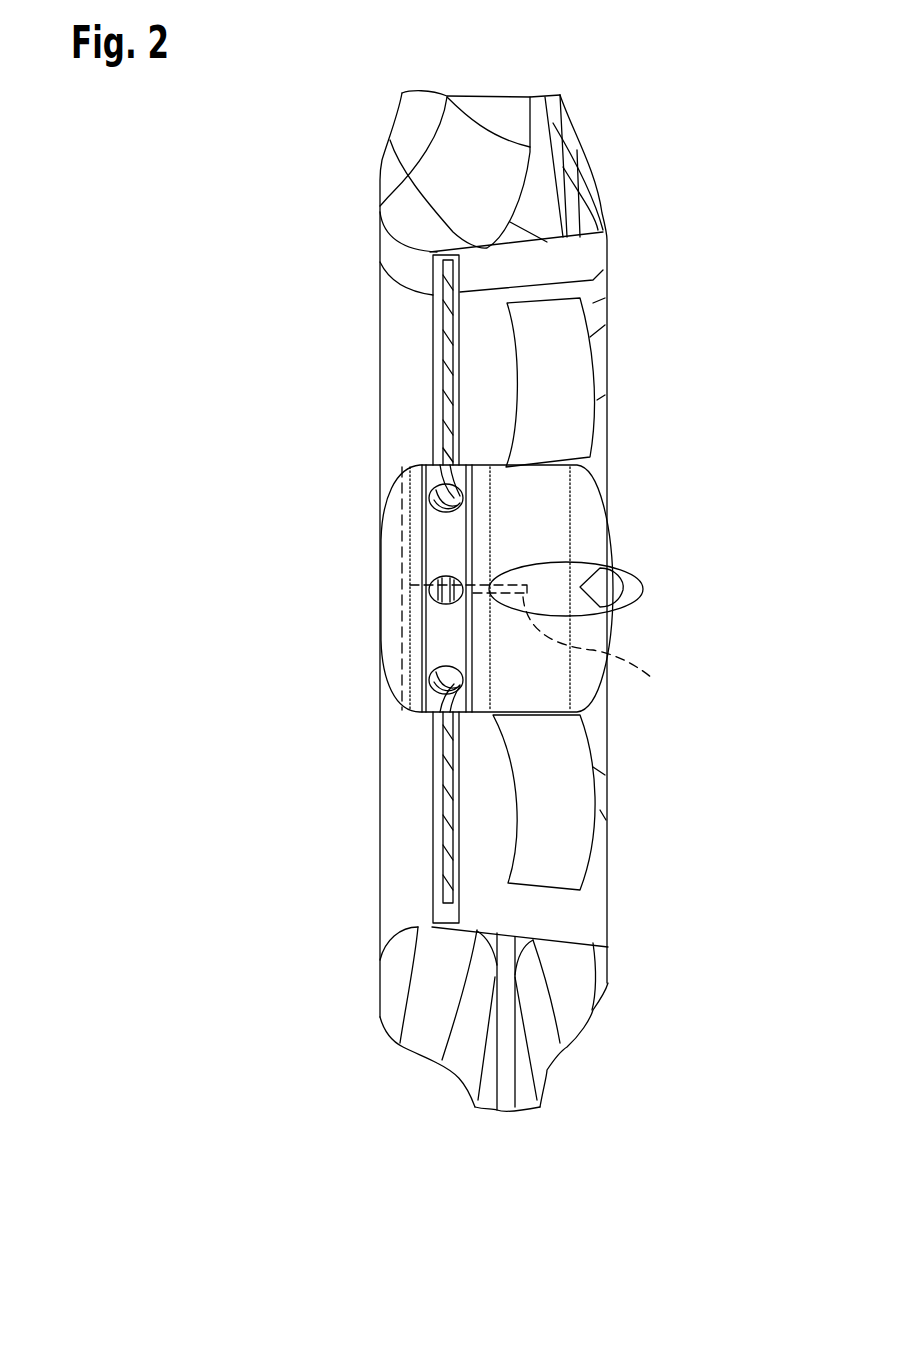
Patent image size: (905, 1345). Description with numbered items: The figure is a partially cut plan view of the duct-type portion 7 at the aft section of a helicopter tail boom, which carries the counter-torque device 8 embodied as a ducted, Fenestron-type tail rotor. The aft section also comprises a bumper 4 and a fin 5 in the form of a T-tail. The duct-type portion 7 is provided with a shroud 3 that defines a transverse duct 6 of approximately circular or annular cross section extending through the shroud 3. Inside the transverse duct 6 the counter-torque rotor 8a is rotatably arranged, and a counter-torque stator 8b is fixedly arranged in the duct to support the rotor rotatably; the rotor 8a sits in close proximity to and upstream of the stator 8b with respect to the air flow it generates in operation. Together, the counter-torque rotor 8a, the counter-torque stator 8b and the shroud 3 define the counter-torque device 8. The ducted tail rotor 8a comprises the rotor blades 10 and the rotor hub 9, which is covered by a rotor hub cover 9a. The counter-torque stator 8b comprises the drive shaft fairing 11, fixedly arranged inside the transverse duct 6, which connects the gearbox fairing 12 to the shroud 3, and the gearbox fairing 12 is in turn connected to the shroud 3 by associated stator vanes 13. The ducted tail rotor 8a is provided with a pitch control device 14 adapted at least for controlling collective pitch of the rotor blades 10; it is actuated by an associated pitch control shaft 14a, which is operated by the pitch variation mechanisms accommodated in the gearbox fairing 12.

The shroud 3 is at (415, 212).
The bumper 4 is at (523, 1093).
The fin 5 is at (497, 113).
The transverse duct 6 is at (518, 920).
The duct-type portion 7 is at (610, 128).
The counter-torque device 8 is at (415, 435).
The counter-torque rotor 8a is at (442, 867).
The counter-torque stator 8b is at (593, 315).
The rotor hub 9 is at (448, 647).
The rotor hub cover 9a is at (427, 587).
The rotor blades 10 is at (447, 333).
The drive shaft fairing 11 is at (633, 587).
The gearbox fairing 12 is at (550, 495).
The stator vanes 13 is at (567, 385).
The pitch control device 14 is at (400, 527).
The pitch control shaft 14a is at (554, 642).